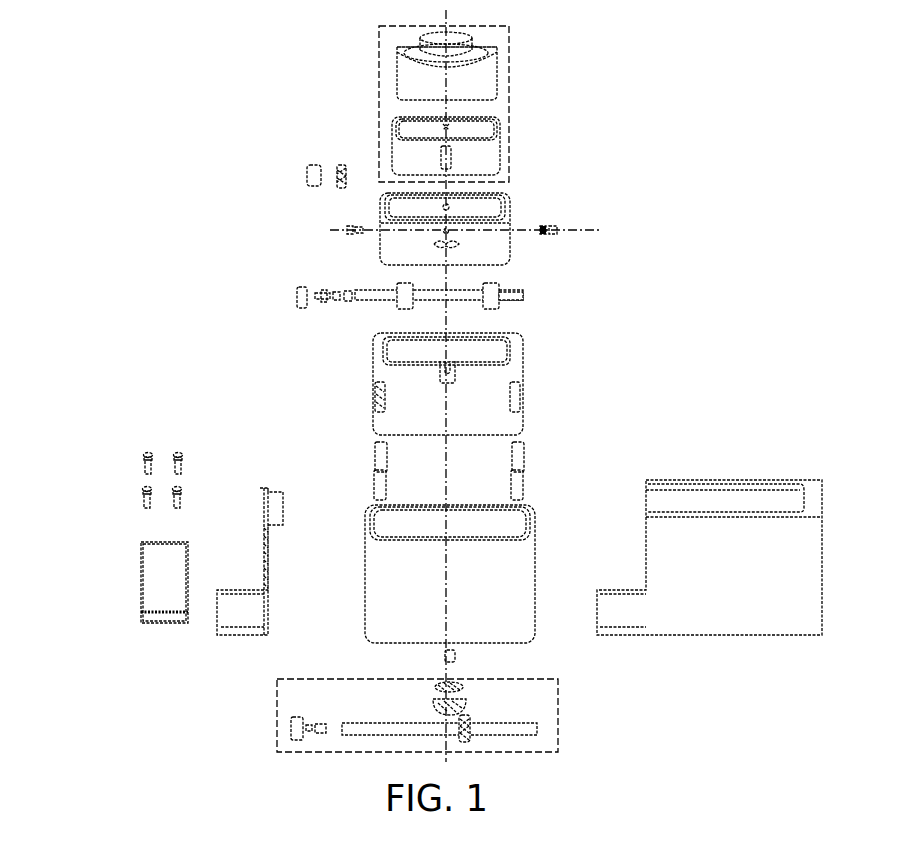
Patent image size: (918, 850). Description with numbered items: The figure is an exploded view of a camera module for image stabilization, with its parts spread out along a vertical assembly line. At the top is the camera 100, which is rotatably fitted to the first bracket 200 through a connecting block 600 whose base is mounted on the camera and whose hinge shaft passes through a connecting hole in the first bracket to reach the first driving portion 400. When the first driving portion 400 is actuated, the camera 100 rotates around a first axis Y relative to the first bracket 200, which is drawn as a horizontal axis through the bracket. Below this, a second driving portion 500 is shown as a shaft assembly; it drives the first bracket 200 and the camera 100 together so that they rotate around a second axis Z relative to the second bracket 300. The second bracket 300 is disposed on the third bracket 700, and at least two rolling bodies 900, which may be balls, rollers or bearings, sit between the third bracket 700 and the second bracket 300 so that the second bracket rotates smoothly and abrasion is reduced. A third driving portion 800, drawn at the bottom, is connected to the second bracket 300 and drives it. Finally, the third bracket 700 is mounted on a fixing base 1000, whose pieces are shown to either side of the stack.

The camera 100 is at (507, 96).
The first bracket 200 is at (490, 207).
The second bracket 300 is at (493, 385).
The first driving portion 400 is at (312, 175).
The second driving portion 500 is at (550, 292).
The connecting block 600 is at (335, 175).
The third bracket 700 is at (503, 560).
The third driving portion 800 is at (548, 721).
The rolling bodies 900 is at (515, 485).
The fixing base 1000 is at (197, 630).
The first axis Y is at (480, 266).
The second axis Z is at (590, 228).